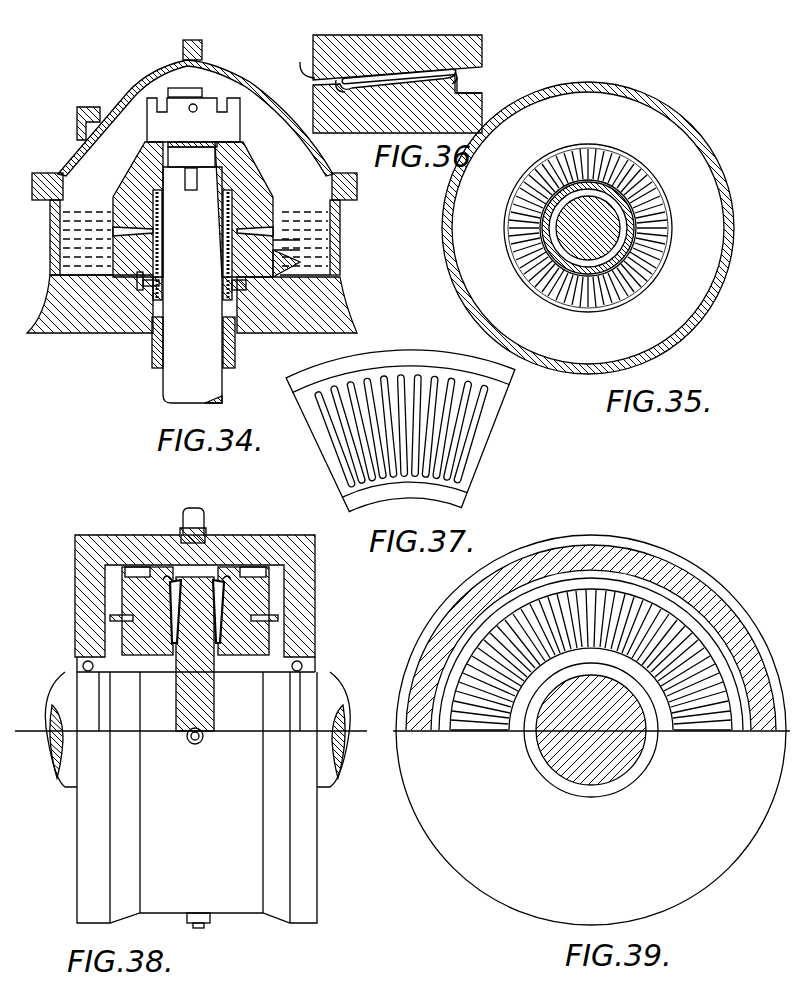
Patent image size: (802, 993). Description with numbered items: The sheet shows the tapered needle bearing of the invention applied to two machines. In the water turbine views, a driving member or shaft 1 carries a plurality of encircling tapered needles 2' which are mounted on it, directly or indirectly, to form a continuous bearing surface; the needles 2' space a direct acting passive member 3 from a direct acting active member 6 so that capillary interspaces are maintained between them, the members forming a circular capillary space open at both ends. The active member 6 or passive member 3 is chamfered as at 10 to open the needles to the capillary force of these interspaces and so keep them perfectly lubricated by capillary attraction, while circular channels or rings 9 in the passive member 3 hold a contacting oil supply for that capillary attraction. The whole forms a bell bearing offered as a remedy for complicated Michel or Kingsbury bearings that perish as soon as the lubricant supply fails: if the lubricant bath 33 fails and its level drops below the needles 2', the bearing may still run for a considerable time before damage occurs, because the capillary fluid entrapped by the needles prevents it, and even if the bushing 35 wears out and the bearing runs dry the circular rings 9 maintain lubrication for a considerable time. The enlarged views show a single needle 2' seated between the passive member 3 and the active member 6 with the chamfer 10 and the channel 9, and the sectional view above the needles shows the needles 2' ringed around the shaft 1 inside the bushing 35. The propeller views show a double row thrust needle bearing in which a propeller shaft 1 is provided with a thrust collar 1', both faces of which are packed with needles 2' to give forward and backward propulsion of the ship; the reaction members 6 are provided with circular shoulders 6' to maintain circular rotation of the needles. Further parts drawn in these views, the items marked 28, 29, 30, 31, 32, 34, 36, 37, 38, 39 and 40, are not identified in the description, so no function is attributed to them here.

In FIG. 35, the driving member 1 is at (553, 241).
In FIG. 38, the driving member 1 is at (196, 797).
In FIG. 39, the driving member 1 is at (575, 733).
In FIG. 38, the thrust collar 1' is at (177, 660).
In FIG. 39, the thrust collar 1' is at (570, 730).
In FIG. 34, the needles 2' is at (195, 204).
In FIG. 36, the needles 2' is at (406, 46).
In FIG. 35, the needles 2' is at (605, 228).
In FIG. 37, the needles 2' is at (408, 431).
In FIG. 38, the needles 2' is at (205, 569).
In FIG. 39, the needles 2' is at (591, 682).
In FIG. 34, the direct acting passive member 3 is at (277, 250).
In FIG. 36, the direct acting passive member 3 is at (478, 47).
In FIG. 34, the direct acting active member 6 is at (201, 221).
In FIG. 36, the direct acting active member 6 is at (397, 120).
In FIG. 37, the direct acting active member 6 is at (410, 431).
In FIG. 38, the direct acting active member 6 is at (194, 620).
In FIG. 36, the circular shoulders 6' is at (403, 82).
In FIG. 38, the circular shoulders 6' is at (203, 597).
In FIG. 39, the circular shoulders 6' is at (591, 660).
In FIG. 36, the circular channels 9 is at (470, 92).
In FIG. 36, the chamfers 10 is at (297, 59).
In FIG. 34, the housing 28 is at (278, 263).
In FIG. 34, the casing 29 is at (333, 291).
In FIG. 35, the casing 29 is at (697, 315).
In FIG. 34, the dome cover 30 is at (222, 70).
In FIG. 34, the castle nut 31 is at (232, 122).
In FIG. 34, the flange 32 is at (90, 126).
In FIG. 34, the lubricant bath 33 is at (75, 248).
In FIG. 34, the bushing 34 is at (150, 353).
In FIG. 34, the bushing 35 is at (246, 295).
In FIG. 35, the bushing 35 is at (548, 238).
In FIG. 34, the bore 36 is at (192, 182).
In FIG. 38, the stud 37 is at (197, 510).
In FIG. 38, the housing 38 is at (307, 631).
In FIG. 39, the housing 38 is at (468, 848).
In FIG. 38, the screw 39 is at (302, 668).
In FIG. 38, the plug 40 is at (212, 926).